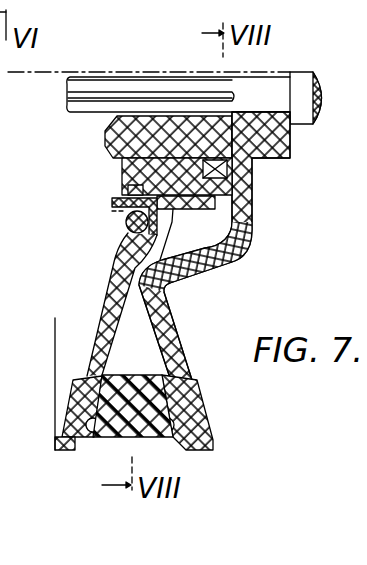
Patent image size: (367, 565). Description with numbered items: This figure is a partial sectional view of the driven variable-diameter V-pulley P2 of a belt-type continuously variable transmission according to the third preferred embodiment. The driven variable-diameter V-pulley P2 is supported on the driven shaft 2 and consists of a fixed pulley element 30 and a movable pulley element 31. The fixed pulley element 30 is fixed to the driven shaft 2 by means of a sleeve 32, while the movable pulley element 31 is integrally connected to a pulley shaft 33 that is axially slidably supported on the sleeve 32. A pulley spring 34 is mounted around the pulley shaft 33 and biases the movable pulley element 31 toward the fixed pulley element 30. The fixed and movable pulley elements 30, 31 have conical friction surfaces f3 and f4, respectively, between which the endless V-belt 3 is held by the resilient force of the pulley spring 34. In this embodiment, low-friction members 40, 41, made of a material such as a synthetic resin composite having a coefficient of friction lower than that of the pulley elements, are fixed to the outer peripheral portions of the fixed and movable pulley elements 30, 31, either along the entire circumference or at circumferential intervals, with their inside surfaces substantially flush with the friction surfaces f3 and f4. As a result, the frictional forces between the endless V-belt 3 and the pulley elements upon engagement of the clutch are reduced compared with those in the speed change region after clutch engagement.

The driven shaft 2 is at (310, 118).
The endless V-belt 3 is at (99, 382).
The fixed pulley element 30 is at (214, 249).
The movable pulley element 31 is at (190, 275).
The sleeve 32 is at (176, 147).
The pulley shaft 33 is at (180, 189).
The pulley spring 34 is at (127, 233).
The low-friction member 40 is at (168, 428).
The low-friction member 41 is at (98, 433).
The conical friction surface f3 is at (154, 343).
The conical friction surface f4 is at (113, 331).
The driven variable-diameter V-pulley P2 is at (226, 268).